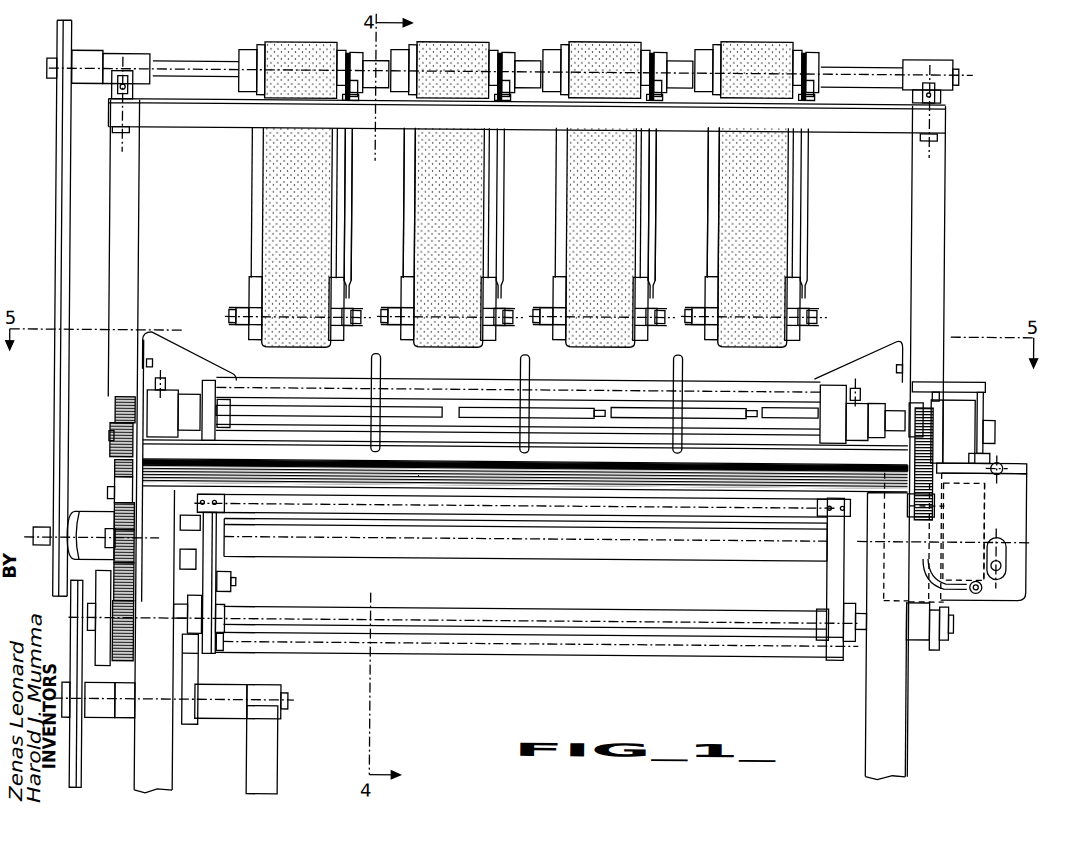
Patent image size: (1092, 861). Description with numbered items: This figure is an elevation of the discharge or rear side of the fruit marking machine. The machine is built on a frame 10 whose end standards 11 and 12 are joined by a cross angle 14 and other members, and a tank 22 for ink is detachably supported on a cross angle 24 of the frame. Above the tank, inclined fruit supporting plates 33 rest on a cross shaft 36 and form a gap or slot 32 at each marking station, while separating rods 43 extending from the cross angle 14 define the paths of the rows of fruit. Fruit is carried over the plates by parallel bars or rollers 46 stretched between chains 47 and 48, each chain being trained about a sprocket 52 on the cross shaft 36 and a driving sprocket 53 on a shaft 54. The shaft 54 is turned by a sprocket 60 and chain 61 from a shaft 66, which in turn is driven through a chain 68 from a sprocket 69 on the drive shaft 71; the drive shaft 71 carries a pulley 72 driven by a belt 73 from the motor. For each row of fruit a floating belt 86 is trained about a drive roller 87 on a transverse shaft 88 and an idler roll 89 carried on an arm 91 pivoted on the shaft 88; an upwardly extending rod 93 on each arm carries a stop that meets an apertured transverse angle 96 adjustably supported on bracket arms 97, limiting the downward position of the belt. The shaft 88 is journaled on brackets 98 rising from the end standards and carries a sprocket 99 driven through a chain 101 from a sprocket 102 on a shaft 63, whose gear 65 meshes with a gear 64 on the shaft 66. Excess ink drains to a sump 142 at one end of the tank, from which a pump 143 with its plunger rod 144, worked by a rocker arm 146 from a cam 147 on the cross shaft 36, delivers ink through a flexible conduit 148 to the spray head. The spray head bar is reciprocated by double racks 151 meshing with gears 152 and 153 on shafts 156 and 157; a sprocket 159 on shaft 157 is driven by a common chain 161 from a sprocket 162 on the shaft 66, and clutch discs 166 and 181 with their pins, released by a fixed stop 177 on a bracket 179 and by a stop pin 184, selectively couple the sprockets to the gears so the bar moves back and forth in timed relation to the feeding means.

The frame 10 is at (908, 721).
The end standard 11 is at (167, 768).
The end standard 12 is at (909, 752).
The cross angle 14 is at (510, 491).
The tank 22 is at (311, 560).
The cross angle 24 is at (366, 519).
The gap or slot 32 is at (303, 400).
The fruit supporting plate 33 is at (432, 400).
The cross shaft 36 is at (486, 420).
The separating rod 43 is at (379, 368).
The bar or roller 46 is at (601, 388).
The chain 47 is at (214, 605).
The chain 48 is at (828, 580).
The sprocket 52 is at (198, 401).
The driving sprocket 53 is at (189, 610).
The shaft 54 is at (530, 614).
The sprocket 60 is at (92, 632).
The chain 61 is at (100, 604).
The shaft 63 is at (42, 532).
The gear 64 is at (134, 653).
The gear 65 is at (128, 577).
The shaft 66 is at (954, 628).
The chain 68 is at (196, 671).
The sprocket 69 is at (201, 716).
The drive shaft 71 is at (290, 700).
The pulley 72 is at (93, 712).
The belt 73 is at (80, 762).
The belt 86 is at (418, 204).
The drive roller 87 is at (488, 49).
The transverse shaft 88 is at (198, 63).
The idler roll 89 is at (404, 296).
The arm 91 is at (410, 237).
The rod 93 is at (351, 184).
The apertured transverse angle 96 is at (197, 124).
The bracket arm 97 is at (138, 211).
The bracket 98 is at (940, 103).
The sprocket 99 is at (87, 54).
The chain 101 is at (55, 167).
The sprocket 102 is at (50, 515).
The sump 142 is at (1024, 551).
The pump 143 is at (991, 452).
The plunger rod 144 is at (980, 401).
The rocker arm 146 is at (958, 379).
The cam 147 is at (916, 434).
The flexible conduit 148 is at (971, 592).
The double rack 151 is at (120, 491).
The gear 152 is at (112, 500).
The gear 153 is at (115, 414).
The shaft 156 is at (110, 543).
The shaft 157 is at (112, 441).
The sprocket 159 is at (936, 389).
The chain 161 is at (942, 556).
The sprocket 162 is at (926, 641).
The clutch disc 166 is at (978, 514).
The fixed stop 177 is at (1005, 572).
The bracket 179 is at (1015, 482).
The clutch disc 181 is at (966, 416).
The stop pin 184 is at (1004, 464).